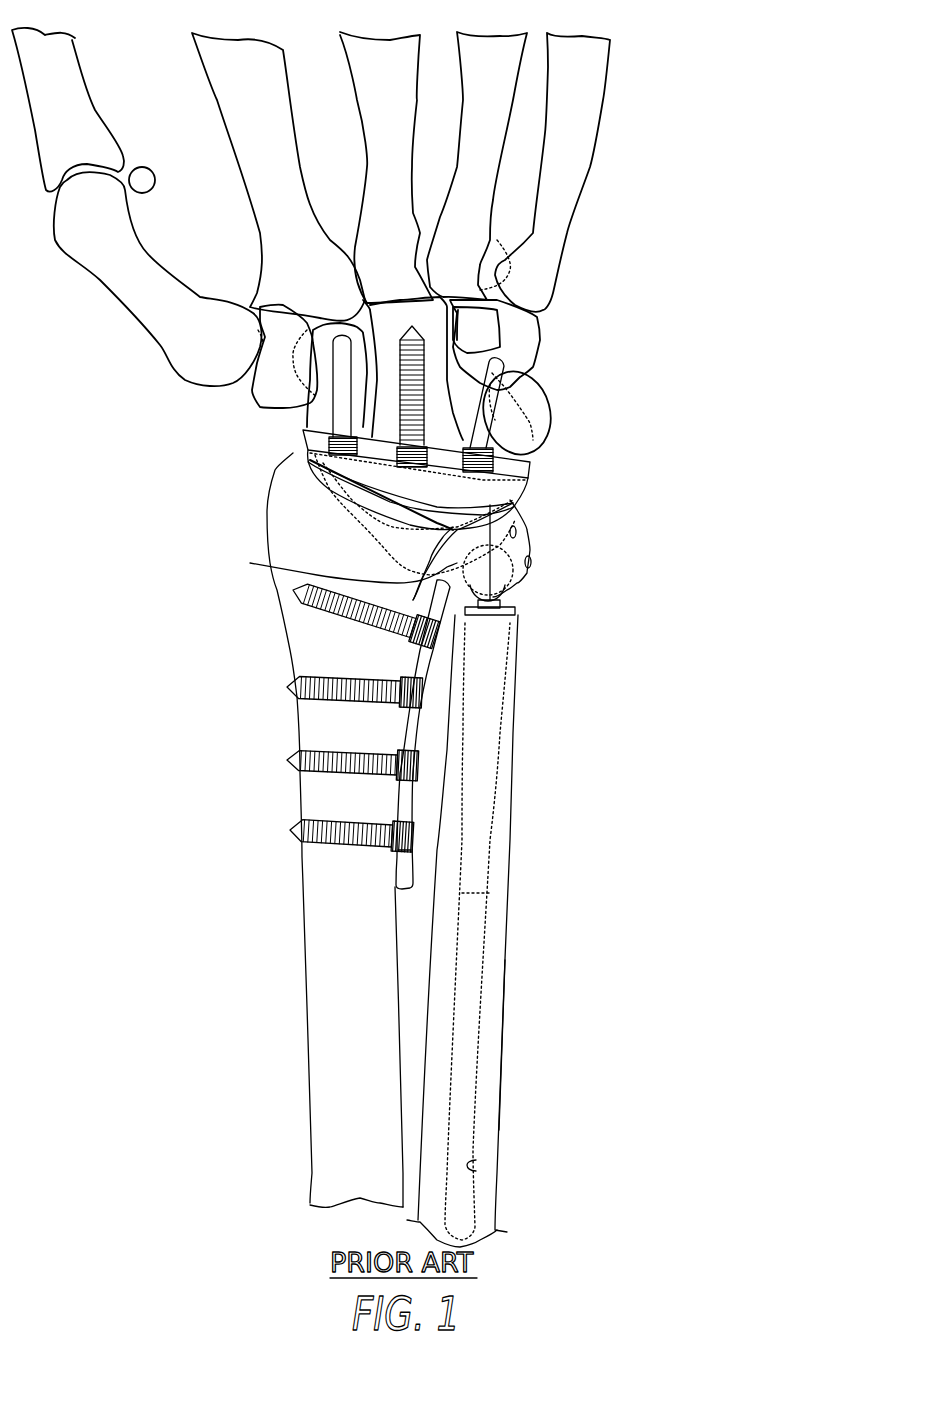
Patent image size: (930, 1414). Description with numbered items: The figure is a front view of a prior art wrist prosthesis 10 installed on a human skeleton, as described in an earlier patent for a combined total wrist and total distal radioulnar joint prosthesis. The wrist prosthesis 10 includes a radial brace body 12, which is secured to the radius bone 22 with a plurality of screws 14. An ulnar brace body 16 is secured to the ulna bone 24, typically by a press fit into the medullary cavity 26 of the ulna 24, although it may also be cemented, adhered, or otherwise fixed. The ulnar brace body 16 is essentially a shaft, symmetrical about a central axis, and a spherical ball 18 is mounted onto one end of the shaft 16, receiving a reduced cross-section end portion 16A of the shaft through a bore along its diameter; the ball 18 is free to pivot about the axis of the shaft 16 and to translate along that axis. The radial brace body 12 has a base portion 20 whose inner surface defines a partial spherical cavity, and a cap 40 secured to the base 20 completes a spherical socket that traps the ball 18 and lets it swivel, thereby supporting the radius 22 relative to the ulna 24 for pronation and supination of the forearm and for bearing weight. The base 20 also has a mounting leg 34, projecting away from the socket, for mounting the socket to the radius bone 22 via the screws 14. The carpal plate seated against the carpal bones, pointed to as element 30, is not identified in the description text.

The wrist prosthesis 10 is at (620, 578).
The radial brace body 12 is at (415, 665).
The screws 14 is at (292, 827).
The ulnar brace body 16 is at (472, 938).
The reduced cross-section end portion 16A is at (507, 600).
The spherical ball 18 is at (503, 600).
The base portion 20 is at (300, 570).
The radius bone 22 is at (330, 1037).
The ulna bone 24 is at (490, 1098).
The medullary cavity 26 is at (472, 1165).
The carpal plate component 30 is at (540, 484).
The mounting leg 34 is at (410, 790).
The cap 40 is at (525, 545).